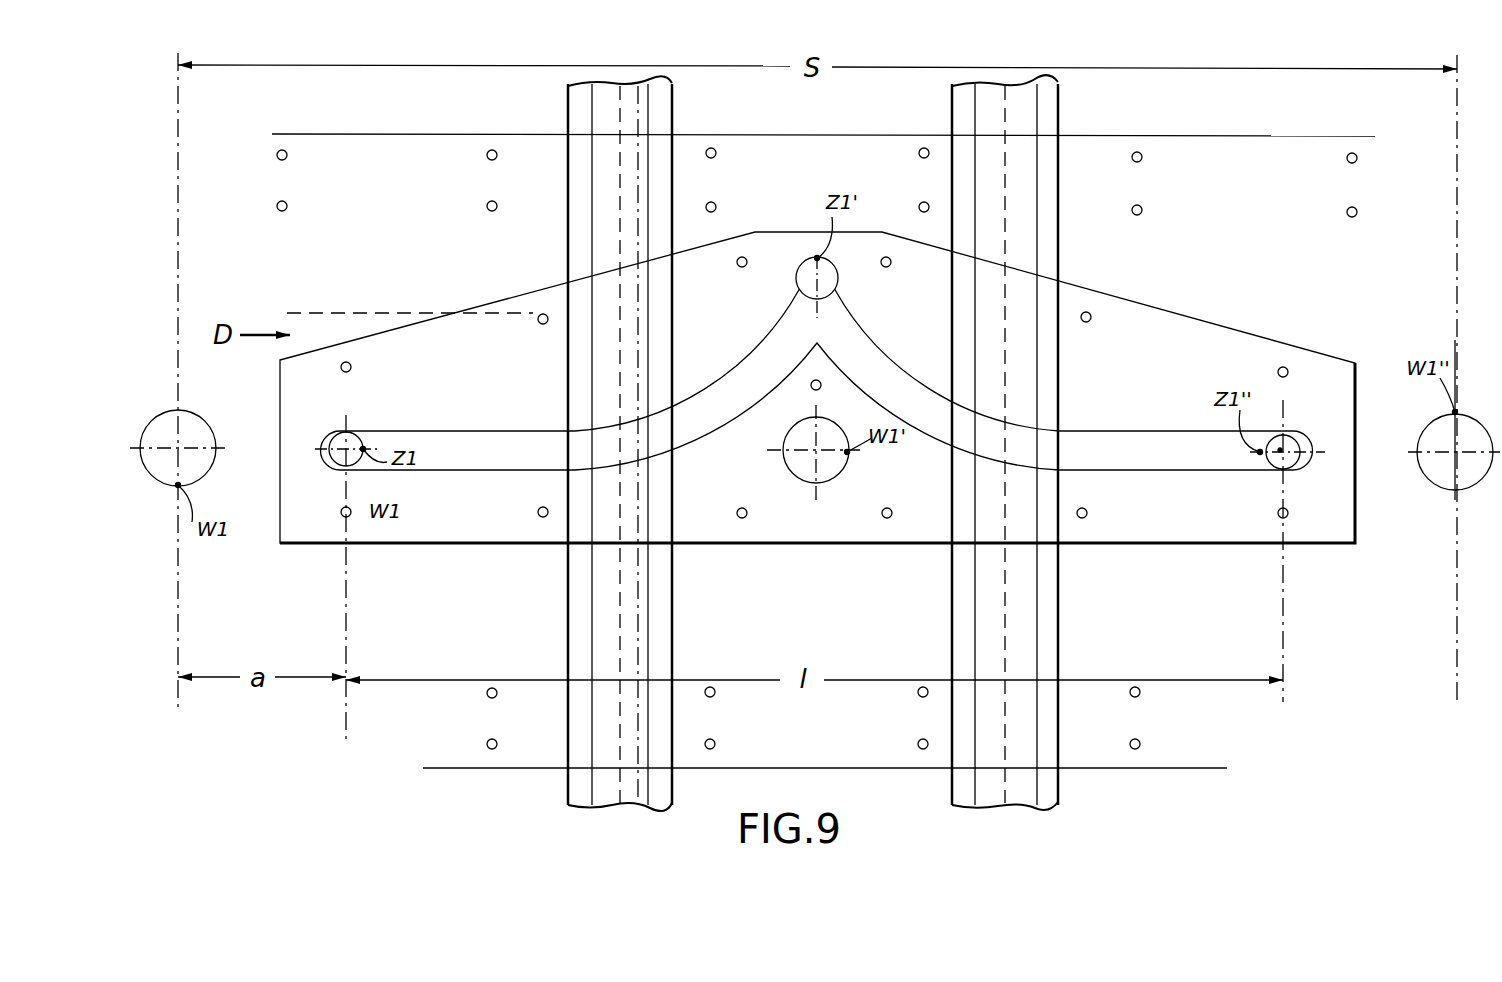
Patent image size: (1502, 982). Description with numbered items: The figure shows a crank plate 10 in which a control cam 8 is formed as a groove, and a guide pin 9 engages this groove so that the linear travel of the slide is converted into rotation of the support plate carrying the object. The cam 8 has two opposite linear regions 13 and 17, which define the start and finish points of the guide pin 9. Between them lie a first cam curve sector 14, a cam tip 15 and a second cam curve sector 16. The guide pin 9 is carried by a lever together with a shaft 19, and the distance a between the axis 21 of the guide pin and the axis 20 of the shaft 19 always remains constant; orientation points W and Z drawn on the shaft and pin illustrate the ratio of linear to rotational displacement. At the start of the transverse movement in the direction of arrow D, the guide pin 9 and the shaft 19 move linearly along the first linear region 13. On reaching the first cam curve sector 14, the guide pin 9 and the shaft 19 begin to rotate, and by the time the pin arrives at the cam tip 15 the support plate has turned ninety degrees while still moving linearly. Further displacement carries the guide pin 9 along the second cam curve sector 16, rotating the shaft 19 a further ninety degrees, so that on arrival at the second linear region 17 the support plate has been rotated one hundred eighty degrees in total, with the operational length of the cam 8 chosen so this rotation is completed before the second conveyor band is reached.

The control cam 8 is at (705, 395).
The guide pin 9 is at (352, 442).
The crank plate 10 is at (472, 312).
The first linear region 13 is at (485, 445).
The first cam curve sector 14 is at (707, 427).
The cam tip 15 is at (815, 258).
The second cam curve sector 16 is at (866, 346).
The second linear region 17 is at (1097, 445).
The shaft 19 is at (198, 467).
The axis of the shaft 20 is at (178, 448).
The axis of the guide pin 21 is at (1280, 450).